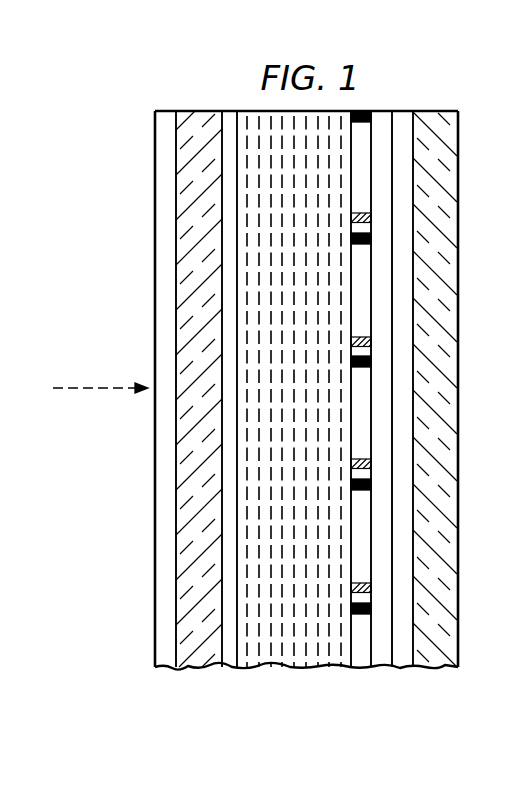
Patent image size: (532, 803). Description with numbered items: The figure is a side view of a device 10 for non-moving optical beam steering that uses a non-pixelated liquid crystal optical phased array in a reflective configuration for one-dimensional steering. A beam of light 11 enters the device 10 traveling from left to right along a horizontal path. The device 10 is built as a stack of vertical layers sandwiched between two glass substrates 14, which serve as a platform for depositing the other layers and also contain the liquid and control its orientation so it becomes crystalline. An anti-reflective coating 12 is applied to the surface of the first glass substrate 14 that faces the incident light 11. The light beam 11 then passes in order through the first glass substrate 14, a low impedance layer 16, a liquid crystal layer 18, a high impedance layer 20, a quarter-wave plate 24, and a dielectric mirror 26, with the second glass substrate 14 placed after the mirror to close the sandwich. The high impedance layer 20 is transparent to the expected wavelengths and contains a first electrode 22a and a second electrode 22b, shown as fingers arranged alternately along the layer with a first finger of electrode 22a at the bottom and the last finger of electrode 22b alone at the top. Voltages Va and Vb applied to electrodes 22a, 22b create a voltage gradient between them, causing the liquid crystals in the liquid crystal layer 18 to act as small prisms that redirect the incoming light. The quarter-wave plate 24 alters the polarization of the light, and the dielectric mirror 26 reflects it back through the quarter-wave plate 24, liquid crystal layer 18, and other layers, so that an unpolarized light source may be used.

The device 10 is at (121, 221).
The beam of light 11 is at (93, 388).
The anti-reflective coating 12 is at (165, 670).
The glass substrates 14 is at (205, 669).
The low impedance layer 16 is at (237, 671).
The liquid crystal layer 18 is at (288, 670).
The high impedance layer 20 is at (430, 415).
The first electrode 22a is at (357, 216).
The second electrode 22b is at (358, 242).
The quarter-wave plate 24 is at (380, 670).
The dielectric mirror 26 is at (402, 670).